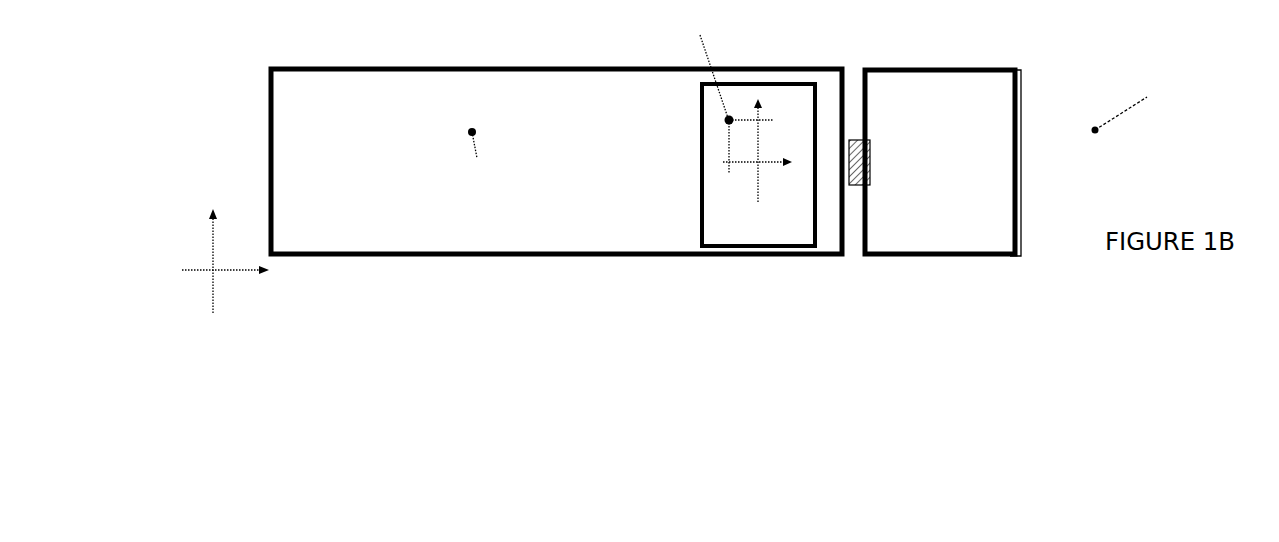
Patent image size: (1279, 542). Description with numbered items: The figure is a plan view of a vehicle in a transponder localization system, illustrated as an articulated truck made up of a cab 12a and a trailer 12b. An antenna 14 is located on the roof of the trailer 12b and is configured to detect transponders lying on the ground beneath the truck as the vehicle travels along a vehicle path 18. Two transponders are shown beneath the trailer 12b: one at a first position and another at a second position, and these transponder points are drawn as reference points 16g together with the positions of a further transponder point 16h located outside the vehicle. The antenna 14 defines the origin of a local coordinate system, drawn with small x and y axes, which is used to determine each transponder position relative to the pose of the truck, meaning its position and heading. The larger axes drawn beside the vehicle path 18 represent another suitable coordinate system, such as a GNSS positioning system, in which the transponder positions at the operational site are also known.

The trailer 12b is at (391, 170).
The cab 12a is at (953, 163).
The antenna 14 is at (761, 225).
The reference point 16g is at (473, 128).
The reference point 16h is at (1096, 131).
The vehicle path 18 is at (168, 245).